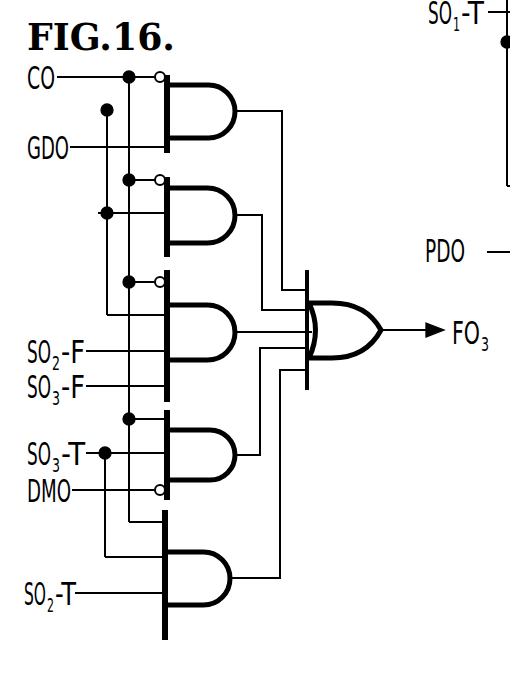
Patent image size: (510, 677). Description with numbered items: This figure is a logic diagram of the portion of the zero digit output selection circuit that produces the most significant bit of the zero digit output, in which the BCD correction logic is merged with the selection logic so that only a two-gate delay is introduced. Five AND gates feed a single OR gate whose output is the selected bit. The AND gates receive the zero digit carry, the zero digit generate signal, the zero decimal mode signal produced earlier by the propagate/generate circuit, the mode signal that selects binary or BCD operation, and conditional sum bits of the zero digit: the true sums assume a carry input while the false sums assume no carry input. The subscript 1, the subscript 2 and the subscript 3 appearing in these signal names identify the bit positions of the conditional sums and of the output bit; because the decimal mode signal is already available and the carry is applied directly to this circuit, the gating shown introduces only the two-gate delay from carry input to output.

The SO1-T input signal line to AND gate 1 is at (165, 627).
The M2 input signal line to AND gate 2 is at (167, 247).
The SO3-F input signal line to AND gate 3 is at (167, 110).